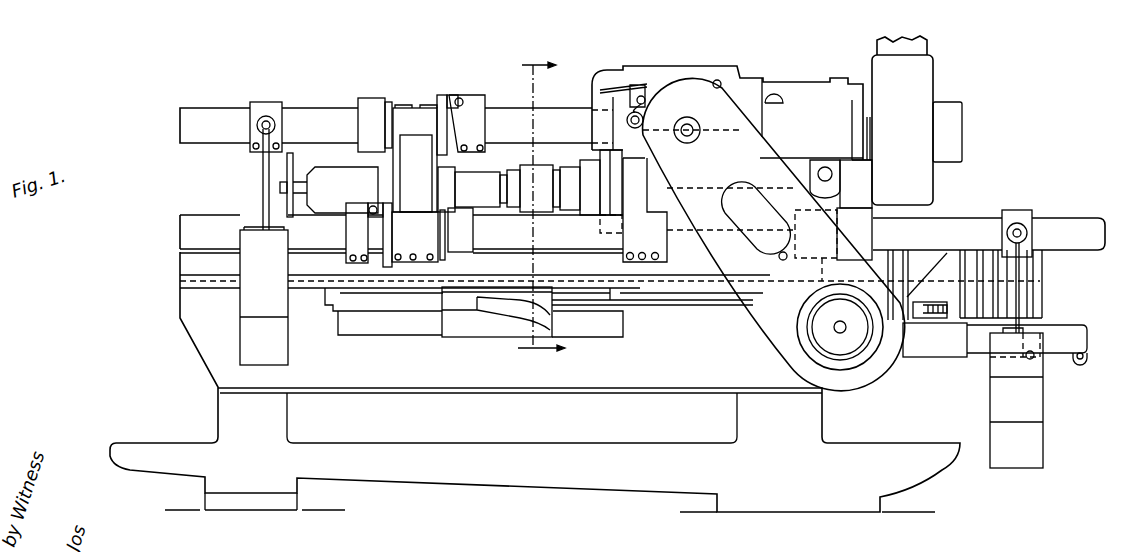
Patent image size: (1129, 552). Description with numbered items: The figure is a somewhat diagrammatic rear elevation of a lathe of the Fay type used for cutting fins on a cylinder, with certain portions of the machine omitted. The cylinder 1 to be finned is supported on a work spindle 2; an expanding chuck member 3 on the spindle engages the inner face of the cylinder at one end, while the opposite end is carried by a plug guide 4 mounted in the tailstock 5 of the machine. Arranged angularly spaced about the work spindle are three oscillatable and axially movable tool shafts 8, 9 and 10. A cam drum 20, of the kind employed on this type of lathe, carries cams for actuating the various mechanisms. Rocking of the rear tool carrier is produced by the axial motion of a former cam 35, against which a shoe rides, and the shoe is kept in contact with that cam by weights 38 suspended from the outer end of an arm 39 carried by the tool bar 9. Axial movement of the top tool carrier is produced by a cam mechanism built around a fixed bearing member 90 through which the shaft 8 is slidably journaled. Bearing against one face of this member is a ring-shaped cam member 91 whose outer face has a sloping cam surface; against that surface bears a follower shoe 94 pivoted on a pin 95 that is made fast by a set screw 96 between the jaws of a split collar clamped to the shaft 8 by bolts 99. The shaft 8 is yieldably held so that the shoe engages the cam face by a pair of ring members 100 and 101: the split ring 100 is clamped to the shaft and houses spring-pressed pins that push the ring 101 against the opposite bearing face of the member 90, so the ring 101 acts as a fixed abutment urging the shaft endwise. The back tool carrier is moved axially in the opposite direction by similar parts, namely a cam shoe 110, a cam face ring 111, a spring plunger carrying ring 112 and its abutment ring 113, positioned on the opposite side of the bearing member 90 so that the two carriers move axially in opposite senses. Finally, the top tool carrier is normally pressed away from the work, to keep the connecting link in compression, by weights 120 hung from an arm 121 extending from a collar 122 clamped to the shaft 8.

The cylinder 1 is at (538, 175).
The work spindle 2 is at (576, 187).
The expanding chuck member 3 is at (529, 202).
The plug guide 4 is at (502, 204).
The tailstock 5 is at (487, 175).
The tool shaft 8 is at (190, 118).
The tool shaft 9 is at (200, 222).
The tool shaft 10 is at (192, 263).
The cam drum 20 is at (240, 533).
The former cam 35 is at (477, 320).
The weights 38 is at (1023, 403).
The arm 39 is at (1012, 232).
The fixed bearing member 90 is at (415, 158).
The cam member 91 is at (442, 97).
The follower shoe 94 is at (452, 95).
The pin 95 is at (463, 100).
The set screw 96 is at (473, 126).
The bolts 99 is at (483, 149).
The ring member 100 is at (368, 108).
The ring member 101 is at (388, 105).
The cam shoe 110 is at (374, 203).
The cam face ring 111 is at (386, 244).
The spring plunger carrying ring 112 is at (466, 238).
The abutment ring 113 is at (444, 255).
The weights 120 is at (256, 303).
The arm 121 is at (262, 124).
The collar 122 is at (270, 100).